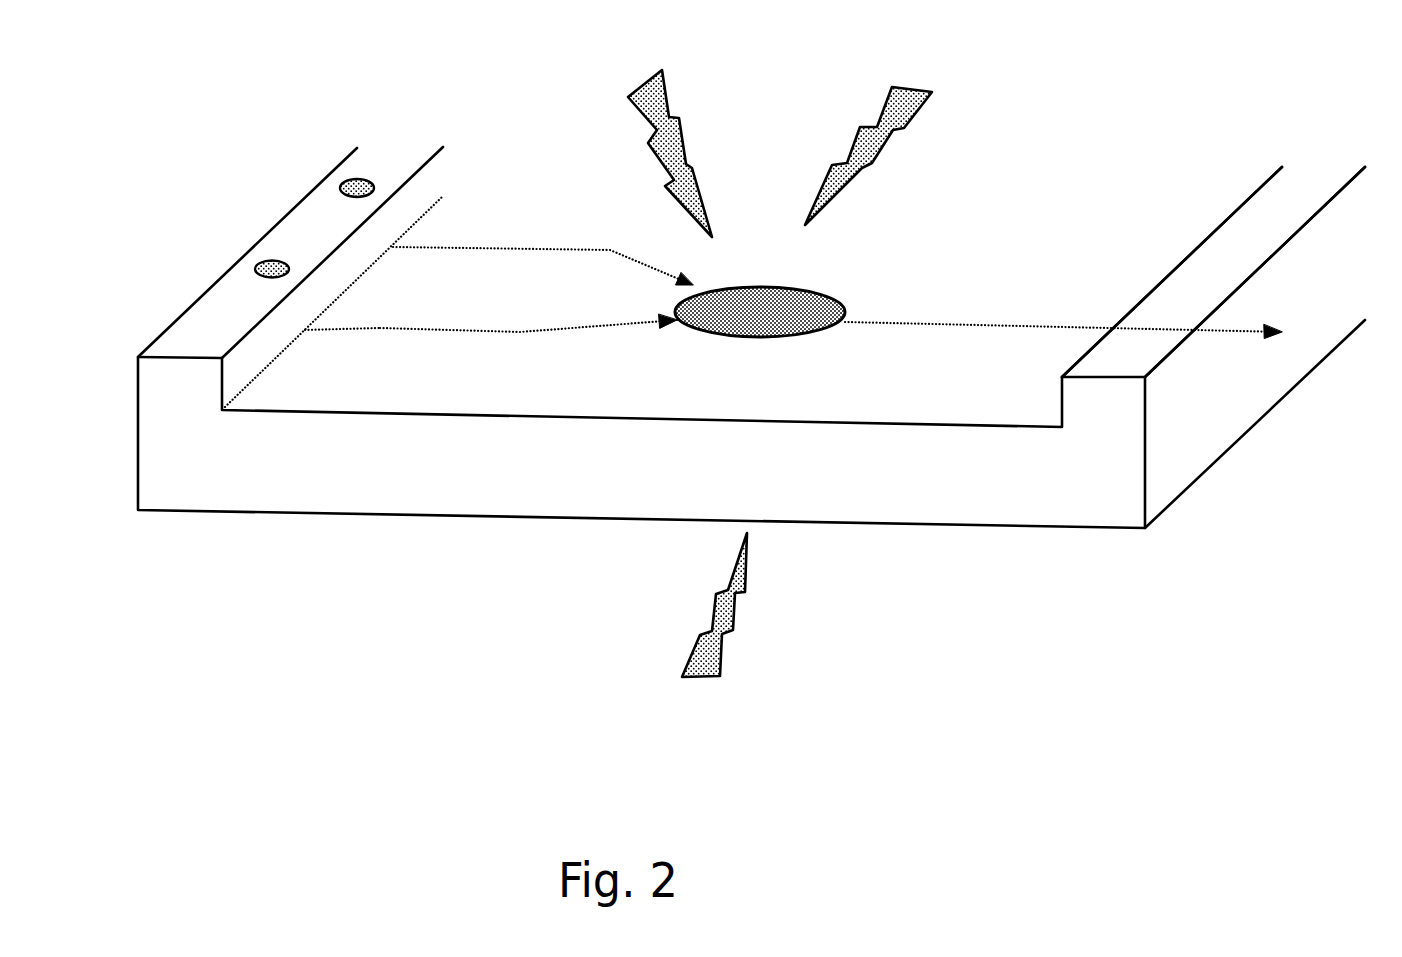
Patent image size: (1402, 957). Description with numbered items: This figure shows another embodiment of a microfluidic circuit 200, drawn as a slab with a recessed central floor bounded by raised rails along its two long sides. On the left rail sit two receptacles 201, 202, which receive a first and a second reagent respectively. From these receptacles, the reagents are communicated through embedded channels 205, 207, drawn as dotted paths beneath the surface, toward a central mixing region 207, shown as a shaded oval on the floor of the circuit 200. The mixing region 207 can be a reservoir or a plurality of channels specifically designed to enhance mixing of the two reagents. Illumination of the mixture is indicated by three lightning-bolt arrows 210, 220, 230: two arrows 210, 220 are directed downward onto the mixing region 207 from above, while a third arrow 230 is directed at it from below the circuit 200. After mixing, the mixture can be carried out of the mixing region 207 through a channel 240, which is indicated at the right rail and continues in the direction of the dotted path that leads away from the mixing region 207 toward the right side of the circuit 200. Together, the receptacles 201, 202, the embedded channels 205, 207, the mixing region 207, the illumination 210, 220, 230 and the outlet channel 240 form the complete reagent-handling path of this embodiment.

The microfluidic circuit 200 is at (728, 363).
The receptacle 201 is at (357, 175).
The receptacle 202 is at (273, 260).
The embedded channel 205 is at (543, 242).
The mixing region 207 is at (793, 334).
The illumination arrow 210 is at (655, 135).
The illumination arrow 220 is at (879, 132).
The illumination arrow 230 is at (704, 636).
The channel 240 is at (980, 323).